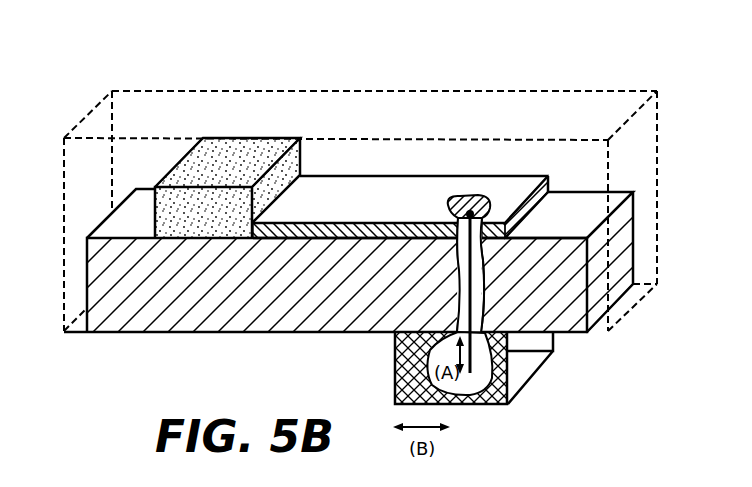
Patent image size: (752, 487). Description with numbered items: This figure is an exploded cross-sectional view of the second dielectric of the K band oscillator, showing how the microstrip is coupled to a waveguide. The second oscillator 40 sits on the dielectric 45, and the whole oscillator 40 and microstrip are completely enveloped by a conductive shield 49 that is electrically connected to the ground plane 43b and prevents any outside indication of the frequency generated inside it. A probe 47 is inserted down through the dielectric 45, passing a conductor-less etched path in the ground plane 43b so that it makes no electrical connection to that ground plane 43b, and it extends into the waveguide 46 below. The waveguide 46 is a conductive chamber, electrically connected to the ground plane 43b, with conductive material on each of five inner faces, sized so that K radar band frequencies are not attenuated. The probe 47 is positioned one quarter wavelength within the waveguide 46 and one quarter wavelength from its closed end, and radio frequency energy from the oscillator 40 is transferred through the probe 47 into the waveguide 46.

The second oscillator 40 is at (243, 162).
The conductive shield 49 is at (469, 90).
The dielectric 45 is at (118, 291).
The ground plane 43b is at (328, 334).
The probe 47 is at (500, 278).
The waveguide 46 is at (477, 406).